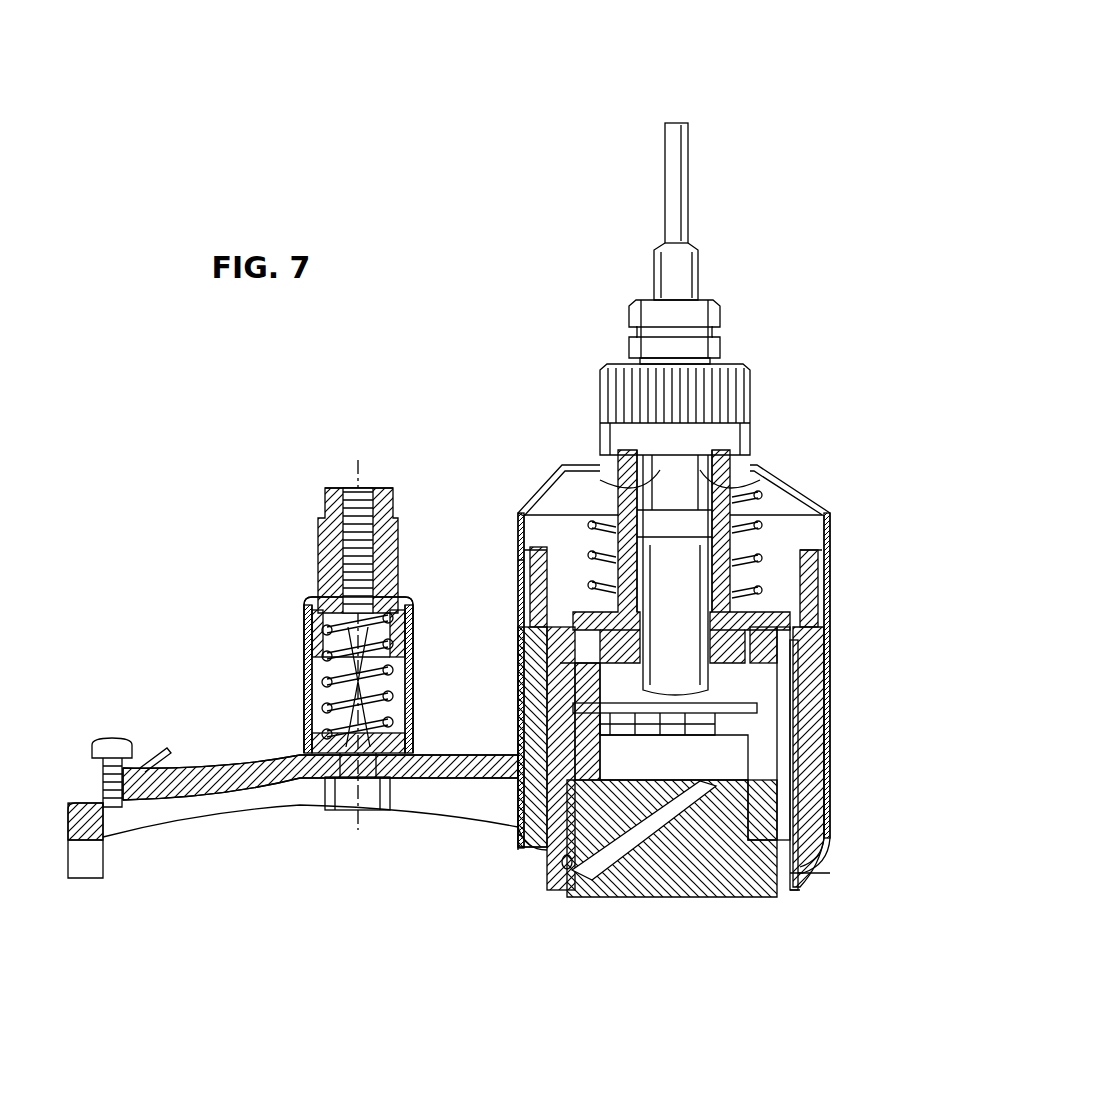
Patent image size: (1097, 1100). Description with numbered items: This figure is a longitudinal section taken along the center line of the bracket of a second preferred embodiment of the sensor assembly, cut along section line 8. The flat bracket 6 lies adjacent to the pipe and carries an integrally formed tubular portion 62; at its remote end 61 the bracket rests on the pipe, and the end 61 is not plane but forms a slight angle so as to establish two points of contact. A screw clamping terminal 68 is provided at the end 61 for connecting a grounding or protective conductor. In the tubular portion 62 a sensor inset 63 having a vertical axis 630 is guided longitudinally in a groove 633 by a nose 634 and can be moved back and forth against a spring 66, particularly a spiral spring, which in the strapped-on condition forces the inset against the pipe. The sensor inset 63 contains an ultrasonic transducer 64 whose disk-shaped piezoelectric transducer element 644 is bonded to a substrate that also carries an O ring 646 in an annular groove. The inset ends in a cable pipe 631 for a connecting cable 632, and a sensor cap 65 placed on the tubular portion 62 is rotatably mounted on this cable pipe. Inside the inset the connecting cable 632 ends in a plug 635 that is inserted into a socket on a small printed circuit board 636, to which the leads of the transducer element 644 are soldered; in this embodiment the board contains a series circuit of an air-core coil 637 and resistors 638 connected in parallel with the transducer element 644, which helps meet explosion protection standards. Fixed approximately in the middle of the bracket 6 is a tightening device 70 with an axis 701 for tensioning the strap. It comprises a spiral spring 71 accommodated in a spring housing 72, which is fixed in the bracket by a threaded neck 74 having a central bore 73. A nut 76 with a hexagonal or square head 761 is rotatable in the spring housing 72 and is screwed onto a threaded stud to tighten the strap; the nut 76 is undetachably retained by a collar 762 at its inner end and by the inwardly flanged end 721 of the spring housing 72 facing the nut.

The bracket 6 is at (245, 765).
The end of the bracket 61 is at (98, 865).
The tubular portion 62 is at (810, 565).
The sensor inset 63 is at (820, 782).
The ultrasonic transducer 64 is at (652, 893).
The sensor cap 65 is at (818, 487).
The spring 66 is at (768, 490).
The screw clamping terminal 68 is at (128, 726).
The tightening device 70 is at (380, 447).
The axis of the tightening device 701 is at (345, 457).
The spiral spring 71 is at (395, 690).
The spring housing 72 is at (310, 700).
The end of the spring housing 721 is at (408, 605).
The central bore 73 is at (388, 815).
The threaded neck 74 is at (340, 815).
The nut 76 is at (325, 545).
The head of the nut 761 is at (395, 502).
The collar 762 is at (310, 652).
The section line 8- 8 is at (676, 963).
The vertical axis 630 is at (688, 215).
The cable pipe 631 is at (627, 326).
The connecting cable 632 is at (672, 188).
The groove 633 is at (800, 880).
The nose 634 is at (822, 630).
The plug 635 is at (775, 690).
The printed circuit board 636 is at (812, 715).
The air-core coil 637 is at (600, 763).
The resistors 638 is at (795, 745).
The transducer element 644 is at (602, 890).
The O ring 646 is at (560, 865).